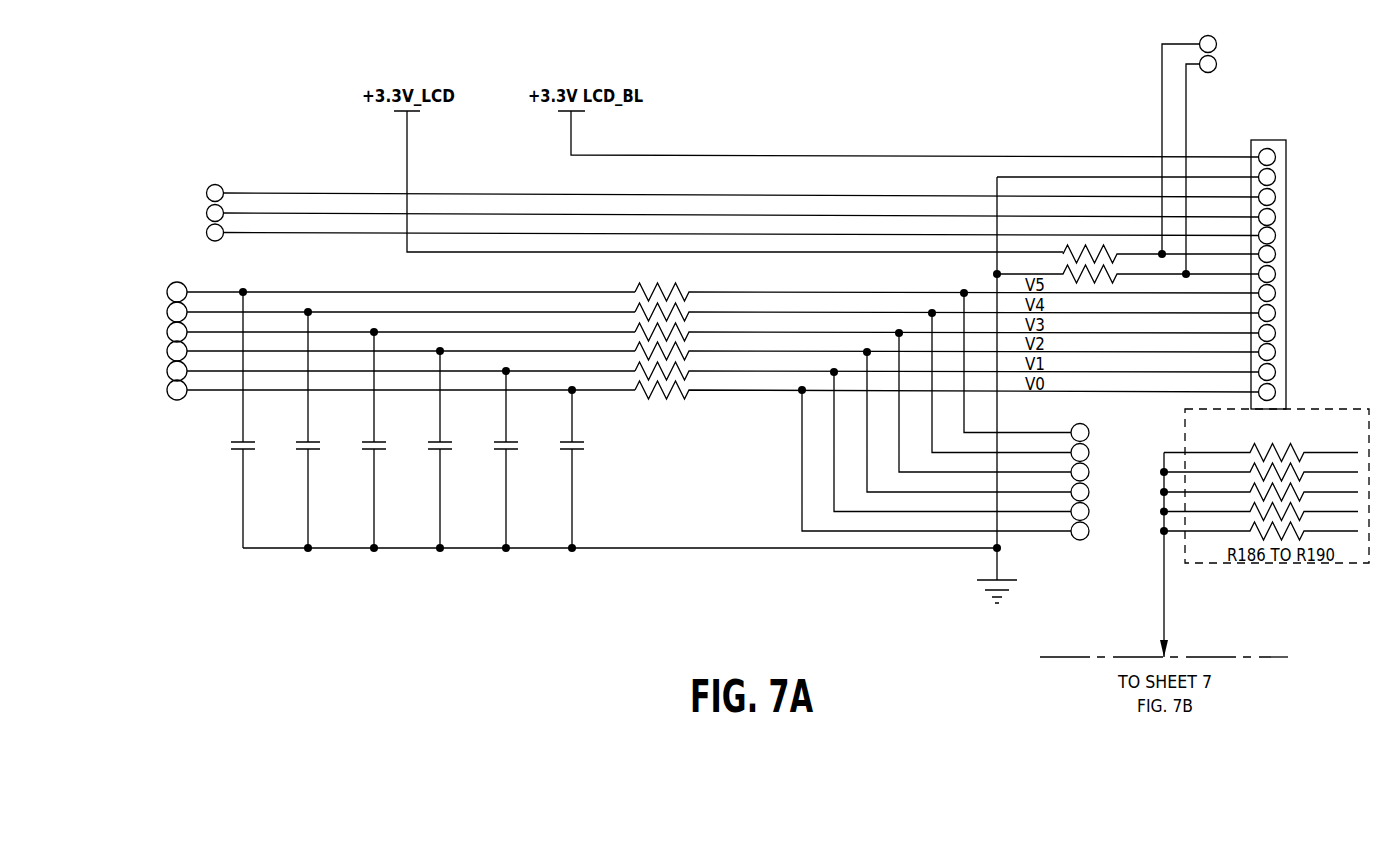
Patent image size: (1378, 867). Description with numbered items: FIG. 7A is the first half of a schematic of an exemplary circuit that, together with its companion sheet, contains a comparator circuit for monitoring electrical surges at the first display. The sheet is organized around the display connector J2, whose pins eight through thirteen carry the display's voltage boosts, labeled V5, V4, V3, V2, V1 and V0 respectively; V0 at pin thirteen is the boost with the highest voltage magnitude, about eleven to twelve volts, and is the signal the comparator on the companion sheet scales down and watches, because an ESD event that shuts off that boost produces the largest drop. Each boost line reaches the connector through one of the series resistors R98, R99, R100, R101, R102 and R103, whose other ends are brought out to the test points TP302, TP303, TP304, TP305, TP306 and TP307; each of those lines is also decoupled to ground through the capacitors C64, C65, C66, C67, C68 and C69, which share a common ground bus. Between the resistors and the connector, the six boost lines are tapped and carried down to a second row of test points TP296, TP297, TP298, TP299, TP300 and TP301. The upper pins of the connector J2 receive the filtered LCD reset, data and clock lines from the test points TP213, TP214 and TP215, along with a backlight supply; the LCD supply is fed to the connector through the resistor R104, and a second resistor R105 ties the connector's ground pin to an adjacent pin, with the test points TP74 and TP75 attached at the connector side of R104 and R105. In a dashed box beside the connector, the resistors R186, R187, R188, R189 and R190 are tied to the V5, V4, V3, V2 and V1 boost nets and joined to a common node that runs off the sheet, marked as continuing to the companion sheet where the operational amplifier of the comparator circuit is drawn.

The test point LCD_RST_FIL TP213 is at (703, 188).
The test point LCD_SDA_FIL TP214 is at (703, 208).
The test point LCD_SCL_FIL TP215 is at (703, 227).
The test point TP302 is at (372, 292).
The test point TP303 is at (372, 312).
The test point TP304 is at (372, 332).
The test point TP305 is at (372, 351).
The test point TP306 is at (372, 371).
The test point TP307 is at (372, 390).
The resistor R98 is at (927, 287).
The resistor R99 is at (927, 307).
The resistor R100 is at (927, 327).
The resistor R101 is at (927, 346).
The resistor R102 is at (927, 366).
The resistor R103 is at (927, 385).
The resistor R104 is at (1139, 248).
The resistor R105 is at (1125, 268).
The capacitor C64 is at (253, 418).
The capacitor C65 is at (318, 430).
The capacitor C66 is at (384, 440).
The capacitor C67 is at (450, 449).
The capacitor C68 is at (516, 459).
The capacitor C69 is at (582, 469).
The test point TP74 is at (1213, 144).
The test point TP75 is at (1225, 164).
The LCD connector 52271-1379 J2 is at (1171, 250).
The test point TP296 is at (1108, 432).
The test point TP297 is at (1108, 452).
The test point TP298 is at (1108, 472).
The test point TP299 is at (1108, 492).
The test point TP300 is at (1108, 511).
The test point TP301 is at (1108, 531).
The resistor R186 is at (1261, 447).
The resistor R187 is at (1261, 467).
The resistor R188 is at (1261, 487).
The resistor R189 is at (1261, 507).
The resistor R190 is at (1261, 526).